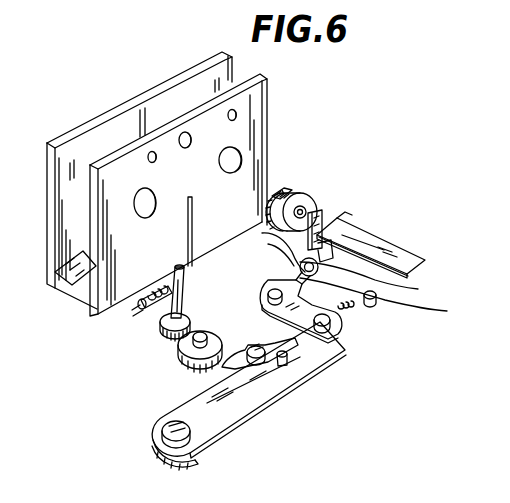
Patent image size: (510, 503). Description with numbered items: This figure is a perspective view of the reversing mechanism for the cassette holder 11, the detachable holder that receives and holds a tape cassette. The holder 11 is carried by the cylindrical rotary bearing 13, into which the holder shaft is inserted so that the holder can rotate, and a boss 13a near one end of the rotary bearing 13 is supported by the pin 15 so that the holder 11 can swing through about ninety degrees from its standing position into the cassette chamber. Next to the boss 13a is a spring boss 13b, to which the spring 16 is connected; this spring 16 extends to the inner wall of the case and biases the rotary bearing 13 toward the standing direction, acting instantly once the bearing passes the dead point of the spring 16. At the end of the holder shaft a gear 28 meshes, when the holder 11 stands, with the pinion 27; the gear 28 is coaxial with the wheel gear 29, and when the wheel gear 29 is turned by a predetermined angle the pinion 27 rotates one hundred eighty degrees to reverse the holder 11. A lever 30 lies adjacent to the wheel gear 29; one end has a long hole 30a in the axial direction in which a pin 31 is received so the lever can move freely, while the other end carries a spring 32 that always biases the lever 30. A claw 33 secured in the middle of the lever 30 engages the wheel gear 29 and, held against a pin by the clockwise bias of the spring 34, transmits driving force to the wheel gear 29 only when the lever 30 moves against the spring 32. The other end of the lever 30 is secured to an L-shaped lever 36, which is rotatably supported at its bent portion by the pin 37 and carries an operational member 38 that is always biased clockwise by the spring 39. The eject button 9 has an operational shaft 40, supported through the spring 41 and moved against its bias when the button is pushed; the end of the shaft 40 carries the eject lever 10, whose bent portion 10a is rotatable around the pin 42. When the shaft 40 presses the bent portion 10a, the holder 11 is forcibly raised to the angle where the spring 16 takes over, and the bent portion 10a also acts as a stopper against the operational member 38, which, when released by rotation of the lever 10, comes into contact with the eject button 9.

The eject button 9 is at (286, 195).
The eject lever 10 is at (426, 262).
The bent portion 10a is at (362, 238).
The cassette holder 11 is at (268, 118).
The rotary bearing 13 is at (168, 310).
The boss 13a is at (148, 303).
The spring boss 13b is at (194, 269).
The pin 15 is at (138, 312).
The spring 16 is at (122, 312).
The pinion 27 is at (188, 321).
The gear 28 is at (180, 348).
The wheel gear 29 is at (174, 372).
The lever 30 is at (240, 390).
The long hole 30a is at (217, 437).
The pin 31 is at (193, 460).
The spring 32 is at (350, 312).
The claw 33 is at (250, 367).
The spring 34 is at (292, 366).
The L-shaped lever 36 is at (334, 328).
The pin 37 is at (442, 311).
The operational member 38 is at (410, 288).
The spring 39 is at (262, 235).
The operational shaft 40 is at (290, 188).
The spring 41 is at (322, 215).
The pin 42 is at (339, 220).